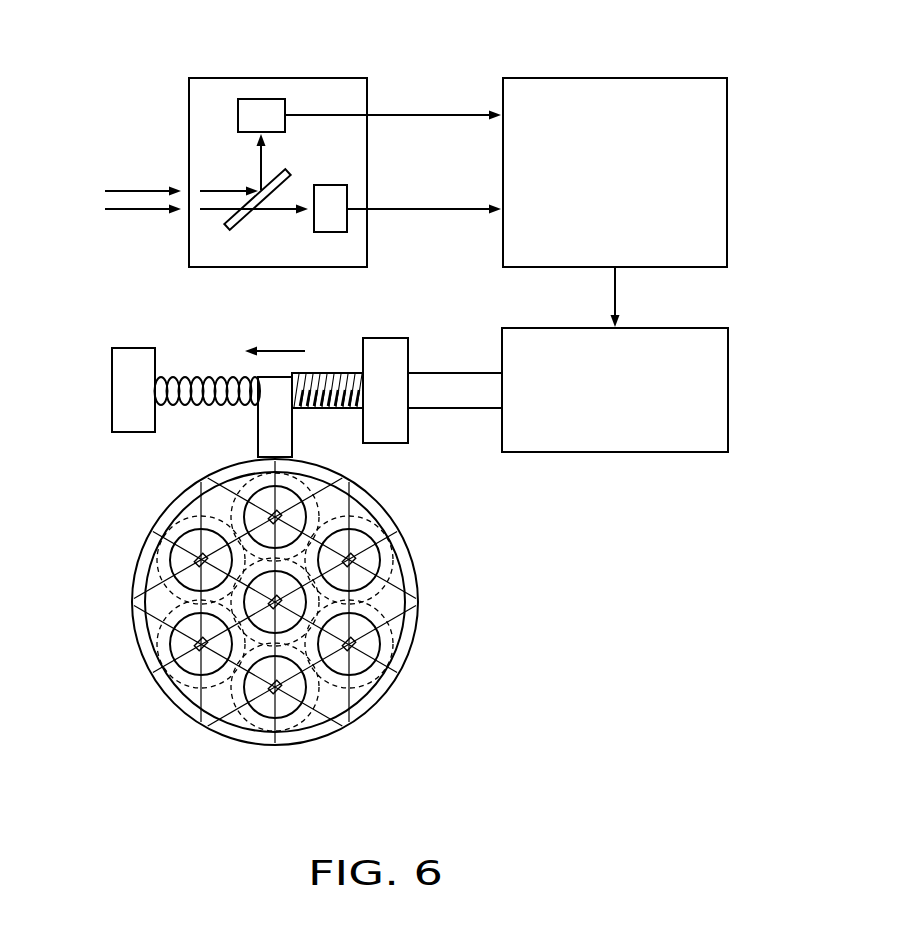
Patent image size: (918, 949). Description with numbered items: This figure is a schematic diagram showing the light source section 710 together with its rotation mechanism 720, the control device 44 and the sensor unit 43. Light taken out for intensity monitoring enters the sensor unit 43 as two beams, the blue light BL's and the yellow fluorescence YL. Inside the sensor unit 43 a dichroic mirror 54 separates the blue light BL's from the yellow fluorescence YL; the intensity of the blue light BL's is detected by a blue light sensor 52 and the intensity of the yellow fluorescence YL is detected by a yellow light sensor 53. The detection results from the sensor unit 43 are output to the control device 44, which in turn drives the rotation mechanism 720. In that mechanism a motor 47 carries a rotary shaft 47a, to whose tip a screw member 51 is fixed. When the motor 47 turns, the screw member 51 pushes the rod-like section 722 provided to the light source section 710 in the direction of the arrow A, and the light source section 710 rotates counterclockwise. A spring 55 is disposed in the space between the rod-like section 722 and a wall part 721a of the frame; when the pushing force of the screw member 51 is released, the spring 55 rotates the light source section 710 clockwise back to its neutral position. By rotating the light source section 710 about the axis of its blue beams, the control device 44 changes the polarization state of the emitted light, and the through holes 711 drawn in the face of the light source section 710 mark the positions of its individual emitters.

The sensor unit 43 is at (322, 78).
The control device 44 is at (615, 78).
The motor 47 is at (620, 452).
The rotary shaft 47a is at (452, 383).
The screw member 51 is at (330, 378).
The blue light sensor 52 is at (261, 99).
The yellow light sensor 53 is at (347, 222).
The dichroic mirror 54 is at (246, 218).
The spring 55 is at (188, 377).
The light source section 710 is at (289, 602).
The through hole 711 is at (172, 647).
The rotation mechanism 720 is at (153, 378).
The wall part 721a is at (112, 390).
The rod-like section 722 is at (258, 425).
The arrow A is at (282, 350).
The blue light BLs' BL's is at (139, 156).
The yellow fluorescence YL is at (133, 212).